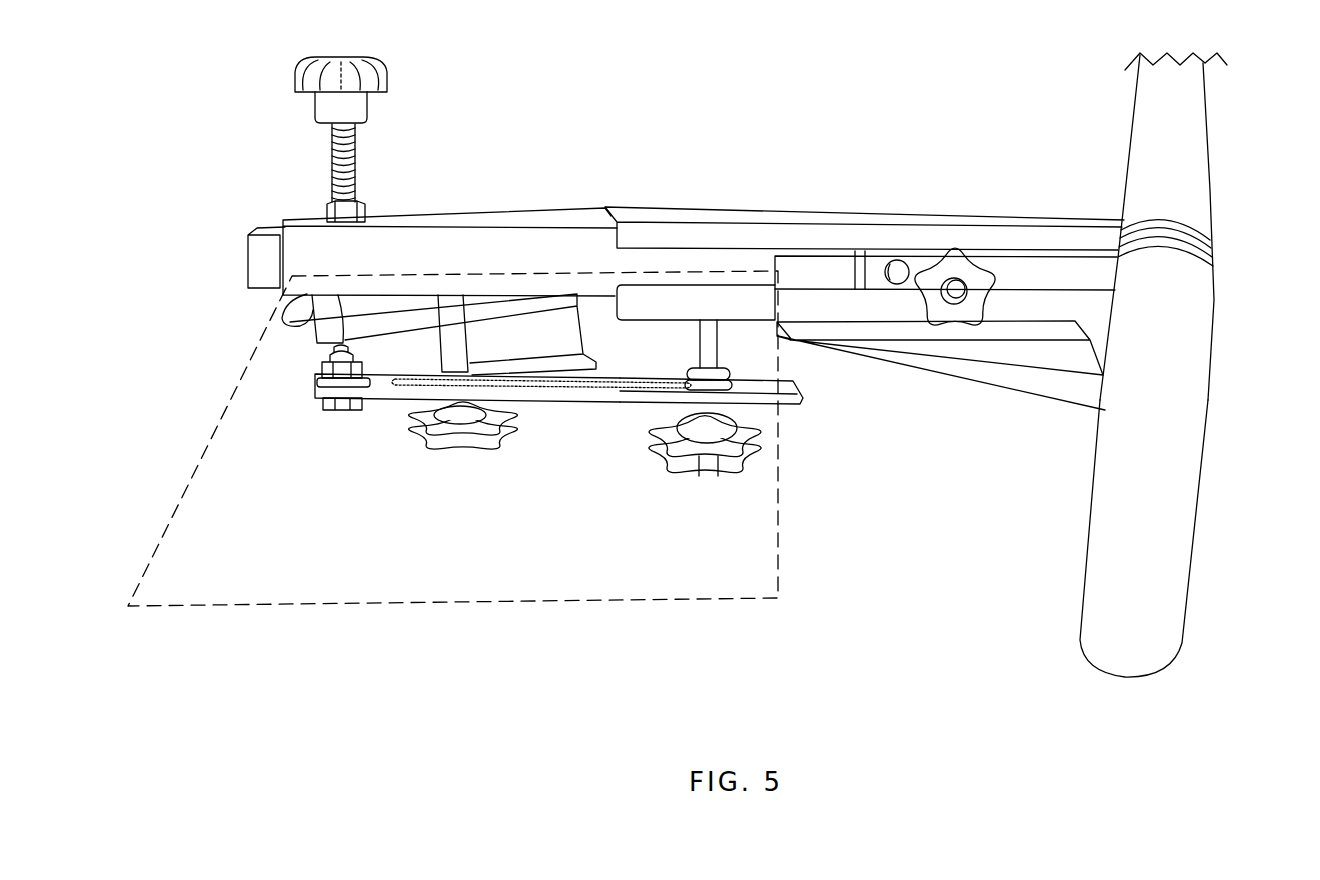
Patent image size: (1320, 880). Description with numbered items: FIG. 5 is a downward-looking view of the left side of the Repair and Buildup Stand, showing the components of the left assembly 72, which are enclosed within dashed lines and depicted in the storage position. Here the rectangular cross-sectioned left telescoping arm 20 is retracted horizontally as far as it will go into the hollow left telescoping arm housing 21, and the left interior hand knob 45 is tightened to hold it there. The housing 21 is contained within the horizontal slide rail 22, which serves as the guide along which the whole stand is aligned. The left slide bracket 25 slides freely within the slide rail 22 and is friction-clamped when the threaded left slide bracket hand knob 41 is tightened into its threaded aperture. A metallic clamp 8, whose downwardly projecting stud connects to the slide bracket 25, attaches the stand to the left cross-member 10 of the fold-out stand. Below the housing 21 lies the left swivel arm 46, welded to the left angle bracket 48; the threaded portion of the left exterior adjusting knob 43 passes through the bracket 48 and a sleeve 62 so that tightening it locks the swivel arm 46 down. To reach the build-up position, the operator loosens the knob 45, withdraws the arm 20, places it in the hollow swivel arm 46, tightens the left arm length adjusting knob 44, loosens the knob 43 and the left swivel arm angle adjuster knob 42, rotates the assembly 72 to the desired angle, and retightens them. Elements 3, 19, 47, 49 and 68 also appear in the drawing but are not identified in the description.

The bicycle frame tube lower portion 3 is at (1180, 508).
The clamp 8 is at (1193, 232).
The left cross-member 10 is at (1205, 140).
The bolt and nut assembly 19 is at (325, 405).
The left telescoping arm 20 is at (243, 248).
The left telescoping arm housing 21 is at (496, 242).
The horizontal slide rail 22 is at (818, 233).
The left slide bracket 25 is at (1042, 277).
The left slide bracket hand knob 41 is at (970, 316).
The left swivel arm angle adjuster knob 42 is at (709, 480).
The left exterior adjusting knob 43 is at (433, 445).
The left arm length adjusting knob 44 is at (277, 313).
The left interior hand knob 45 is at (383, 56).
The left swivel arm 46 is at (313, 358).
The support bracket 47 is at (795, 400).
The left angle bracket 48 is at (540, 365).
The slotted plate 49 is at (425, 383).
The sleeve 62 is at (436, 335).
The threaded rod 68 is at (353, 165).
The left assembly 72 is at (332, 608).